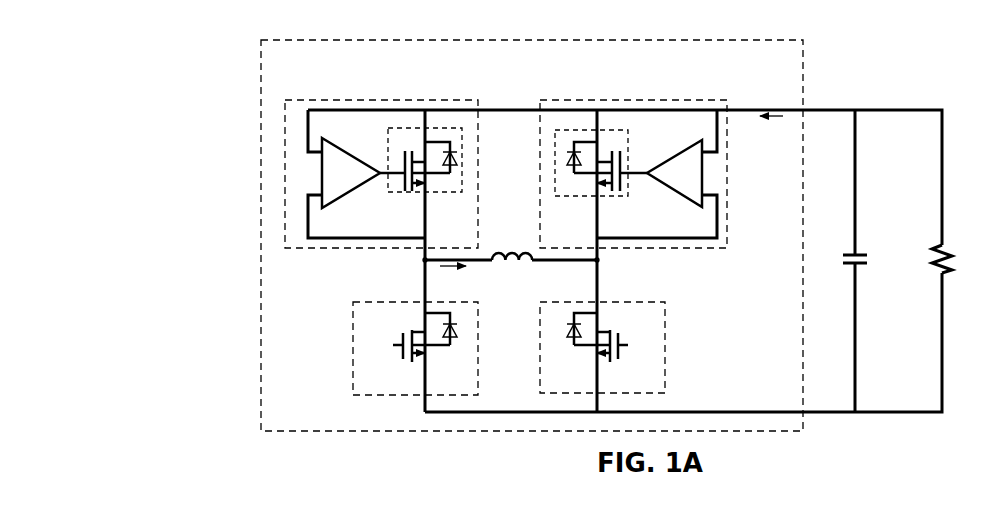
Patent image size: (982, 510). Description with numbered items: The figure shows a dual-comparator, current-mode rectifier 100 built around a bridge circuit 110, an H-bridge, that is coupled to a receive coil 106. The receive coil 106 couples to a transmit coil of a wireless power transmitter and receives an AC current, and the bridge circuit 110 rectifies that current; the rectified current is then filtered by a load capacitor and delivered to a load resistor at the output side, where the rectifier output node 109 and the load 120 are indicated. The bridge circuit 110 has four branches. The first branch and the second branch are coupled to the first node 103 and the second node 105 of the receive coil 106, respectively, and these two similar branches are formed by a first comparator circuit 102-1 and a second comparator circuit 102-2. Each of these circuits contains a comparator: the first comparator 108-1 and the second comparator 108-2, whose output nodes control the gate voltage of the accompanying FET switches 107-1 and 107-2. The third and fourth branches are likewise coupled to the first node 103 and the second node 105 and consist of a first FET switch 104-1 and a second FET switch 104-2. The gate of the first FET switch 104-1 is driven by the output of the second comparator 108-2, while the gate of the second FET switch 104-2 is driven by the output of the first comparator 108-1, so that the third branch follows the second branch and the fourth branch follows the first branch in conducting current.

The dual-comparator current-mode rectifier 100 is at (243, 100).
The first comparator circuit 102-1 is at (414, 144).
The second comparator circuit 102-2 is at (655, 145).
The first node 103 is at (406, 264).
The first field-effect transistor switch 104-1 is at (481, 322).
The second field-effect transistor switch 104-2 is at (667, 311).
The second node 105 is at (616, 265).
The receive coil 106 is at (511, 260).
The first accompanying FET switch 107-1 is at (466, 157).
The second accompanying FET switch 107-2 is at (590, 126).
The first comparator 108-1 is at (338, 146).
The second comparator 108-2 is at (675, 143).
The output node 109 is at (856, 177).
The bridge circuit 110 is at (317, 423).
The load 120 is at (845, 508).